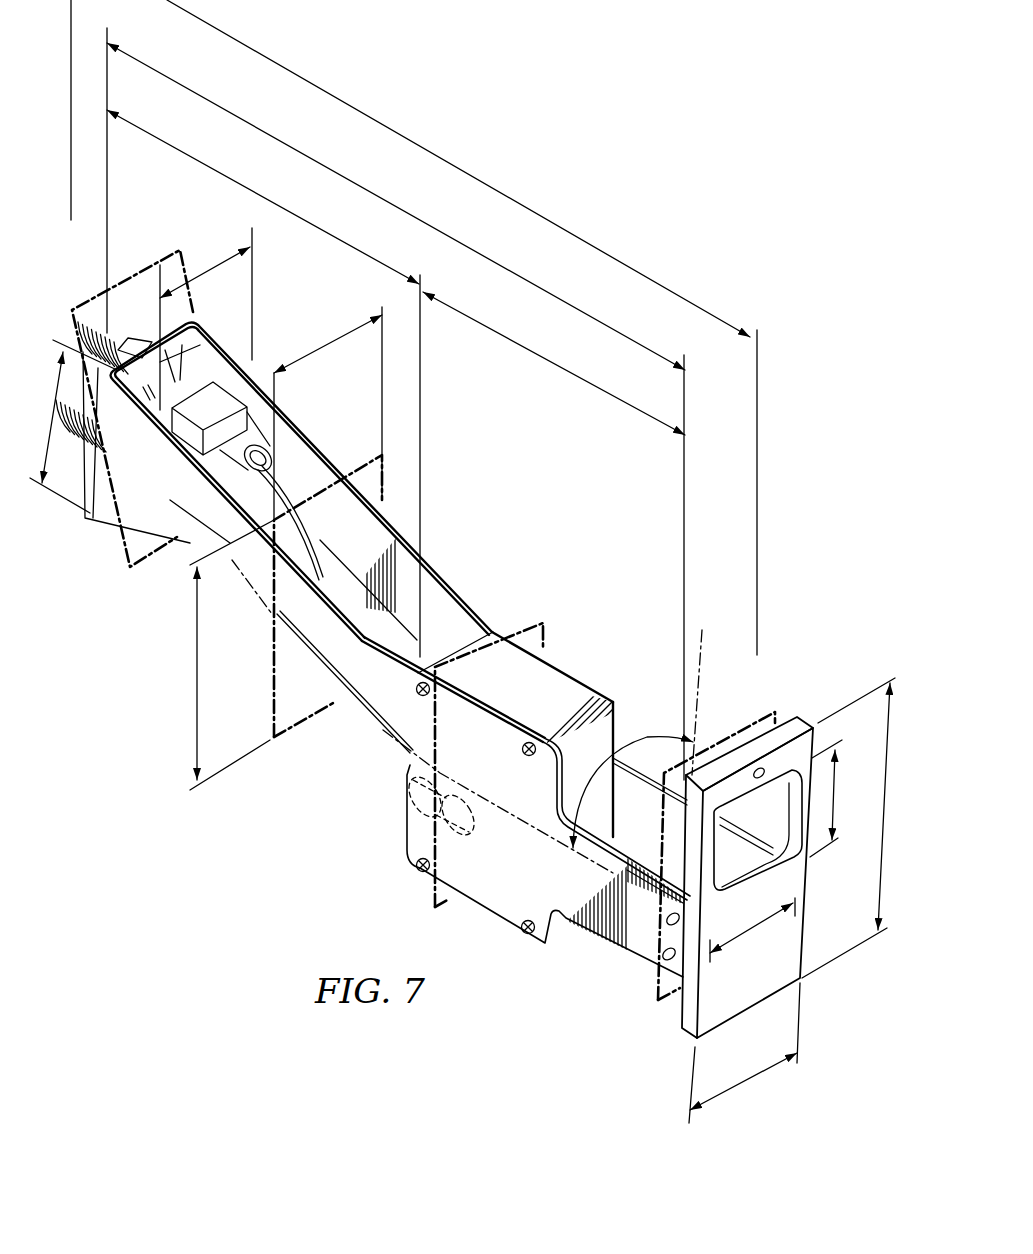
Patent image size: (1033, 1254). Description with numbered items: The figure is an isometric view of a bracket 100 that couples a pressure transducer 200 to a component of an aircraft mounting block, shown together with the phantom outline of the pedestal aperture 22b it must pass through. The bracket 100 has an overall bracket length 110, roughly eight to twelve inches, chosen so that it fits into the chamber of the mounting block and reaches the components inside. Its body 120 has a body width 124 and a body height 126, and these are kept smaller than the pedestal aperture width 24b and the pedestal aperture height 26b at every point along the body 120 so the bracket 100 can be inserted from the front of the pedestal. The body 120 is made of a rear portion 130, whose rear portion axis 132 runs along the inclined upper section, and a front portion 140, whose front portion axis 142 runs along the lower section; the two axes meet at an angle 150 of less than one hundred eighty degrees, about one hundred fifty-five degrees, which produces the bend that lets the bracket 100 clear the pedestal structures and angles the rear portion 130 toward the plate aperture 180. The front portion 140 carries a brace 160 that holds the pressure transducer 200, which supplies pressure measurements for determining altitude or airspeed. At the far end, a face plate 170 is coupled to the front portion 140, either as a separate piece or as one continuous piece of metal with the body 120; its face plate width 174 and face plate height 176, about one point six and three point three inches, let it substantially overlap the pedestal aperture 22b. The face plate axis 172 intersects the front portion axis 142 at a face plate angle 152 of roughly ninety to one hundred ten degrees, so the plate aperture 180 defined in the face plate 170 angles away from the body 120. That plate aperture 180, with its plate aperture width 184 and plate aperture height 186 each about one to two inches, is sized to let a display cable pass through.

The bracket 100 is at (448, 695).
The bracket length 110 is at (520, 200).
The body 120 is at (400, 203).
The body width 124 is at (210, 262).
The body height 126 is at (50, 345).
The rear portion 130 is at (240, 176).
The rear portion axis 132 is at (362, 718).
The front portion 140 is at (555, 352).
The front portion axis 142 is at (518, 827).
The angle 150 is at (396, 768).
The face plate angle 152 is at (638, 738).
The brace 160 is at (412, 840).
The face plate 170 is at (747, 875).
The face plate axis 172 is at (702, 630).
The face plate width 174 is at (750, 1088).
The face plate height 176 is at (883, 920).
The plate aperture 180 is at (770, 833).
The plate aperture width 184 is at (757, 928).
The plate aperture height 186 is at (845, 850).
The pressure transducer 200 is at (565, 665).
The pedestal aperture 22b is at (95, 290).
The pedestal aperture width 24b is at (320, 345).
The pedestal aperture height 26b is at (195, 690).